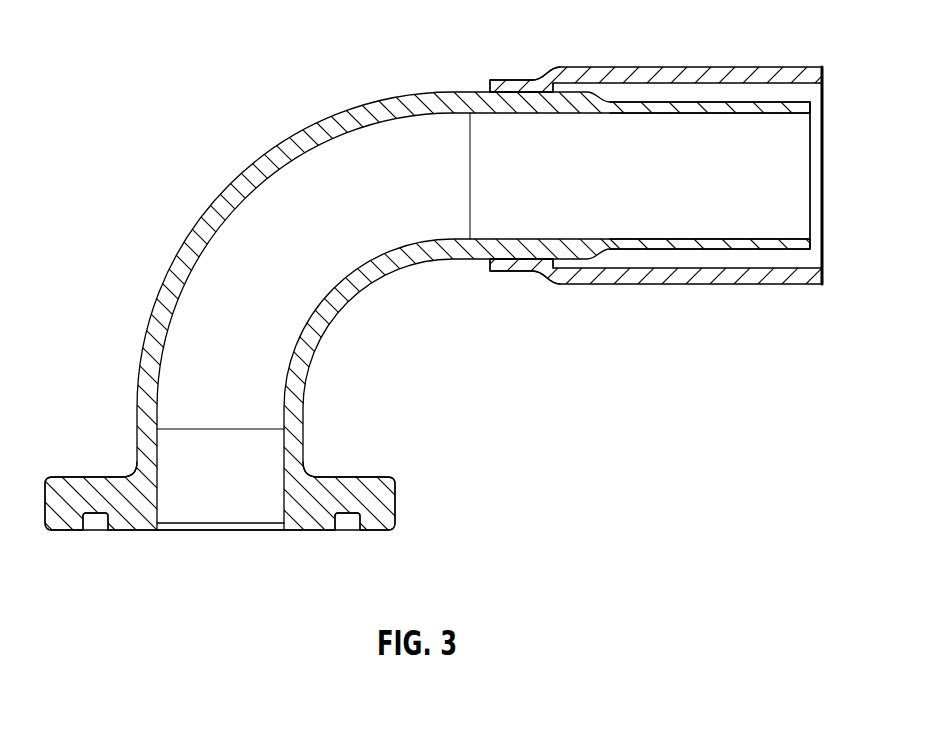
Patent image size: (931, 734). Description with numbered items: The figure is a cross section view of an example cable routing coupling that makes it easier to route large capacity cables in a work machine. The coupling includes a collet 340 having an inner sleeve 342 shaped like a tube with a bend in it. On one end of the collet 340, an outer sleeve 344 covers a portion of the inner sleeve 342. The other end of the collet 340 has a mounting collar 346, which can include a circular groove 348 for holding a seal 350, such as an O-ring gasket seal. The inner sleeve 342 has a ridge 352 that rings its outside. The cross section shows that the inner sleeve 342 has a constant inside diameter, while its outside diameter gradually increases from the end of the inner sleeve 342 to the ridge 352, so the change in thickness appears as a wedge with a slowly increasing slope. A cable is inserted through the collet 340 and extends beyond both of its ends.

The collet 340 is at (438, 303).
The inner sleeve 342 is at (777, 108).
The outer sleeve 344 is at (640, 68).
The mounting collar 346 is at (220, 502).
The circular groove 348 is at (348, 522).
The seal 350 is at (98, 522).
The ridge 352 is at (585, 98).